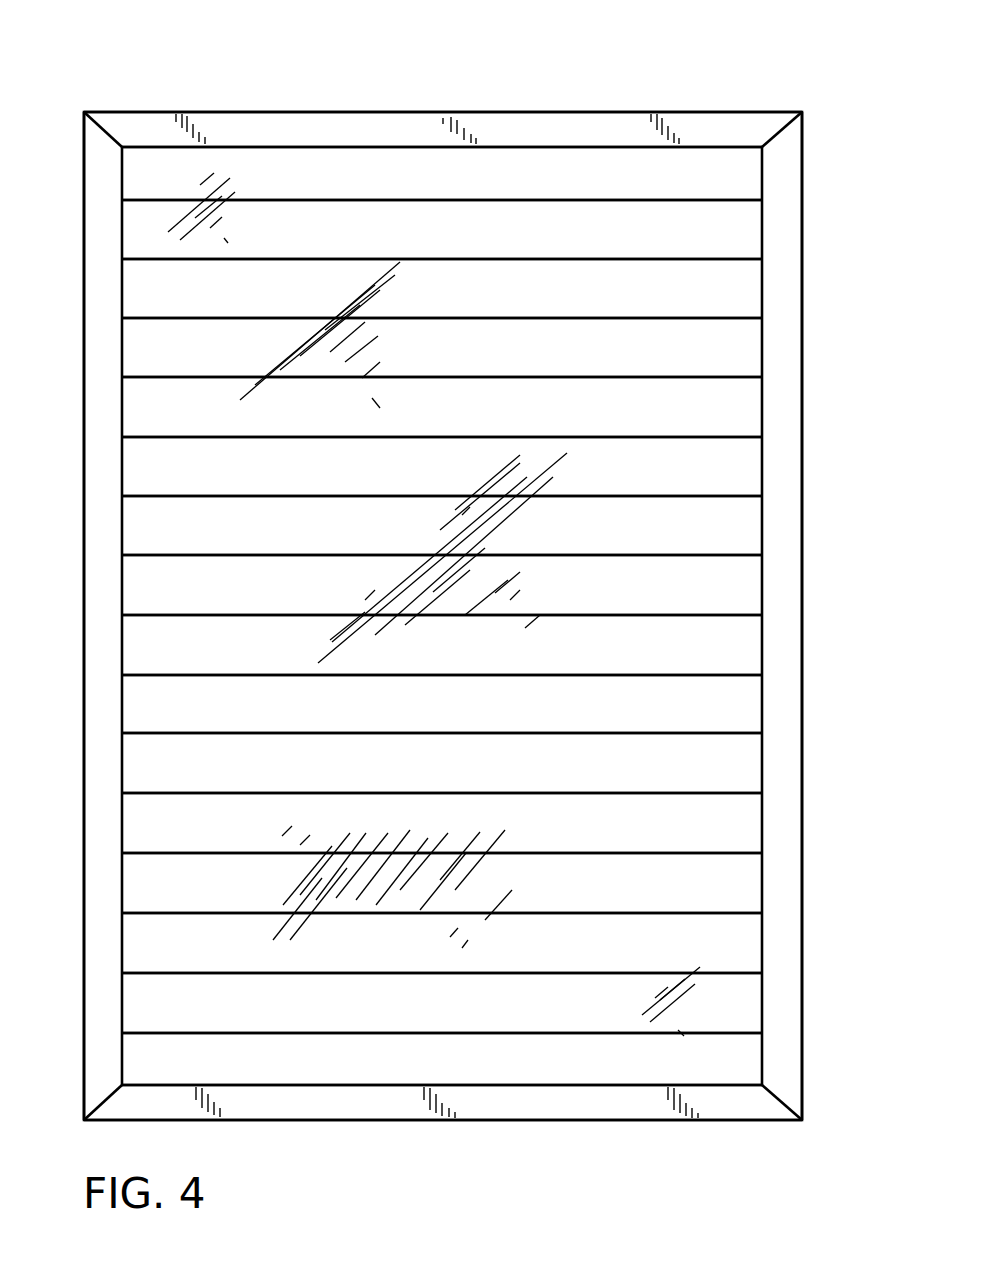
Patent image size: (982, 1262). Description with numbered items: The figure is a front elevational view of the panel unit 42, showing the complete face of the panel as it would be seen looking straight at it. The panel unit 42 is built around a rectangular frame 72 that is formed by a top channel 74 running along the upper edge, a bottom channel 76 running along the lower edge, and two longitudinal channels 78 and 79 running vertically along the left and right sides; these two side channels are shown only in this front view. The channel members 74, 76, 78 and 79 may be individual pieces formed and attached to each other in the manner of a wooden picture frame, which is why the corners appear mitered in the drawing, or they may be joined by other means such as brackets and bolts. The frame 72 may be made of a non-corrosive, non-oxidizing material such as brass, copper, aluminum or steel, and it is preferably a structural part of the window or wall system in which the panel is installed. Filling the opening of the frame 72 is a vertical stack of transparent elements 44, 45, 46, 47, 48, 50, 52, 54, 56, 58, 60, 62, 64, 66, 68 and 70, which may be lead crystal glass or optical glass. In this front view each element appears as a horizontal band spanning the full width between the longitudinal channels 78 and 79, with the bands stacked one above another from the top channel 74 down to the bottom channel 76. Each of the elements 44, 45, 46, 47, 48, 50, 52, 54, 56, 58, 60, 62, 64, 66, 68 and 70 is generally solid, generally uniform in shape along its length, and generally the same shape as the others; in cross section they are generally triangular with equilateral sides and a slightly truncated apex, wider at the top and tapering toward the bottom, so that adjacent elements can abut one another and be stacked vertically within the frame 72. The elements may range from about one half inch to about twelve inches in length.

The panel unit 42 is at (712, 90).
The transparent element 44 is at (747, 187).
The transparent element 45 is at (745, 247).
The transparent element 46 is at (745, 299).
The transparent element 47 is at (741, 360).
The transparent element 48 is at (741, 413).
The transparent element 50 is at (738, 470).
The transparent element 52 is at (742, 530).
The transparent element 54 is at (741, 601).
The transparent element 56 is at (741, 653).
The transparent element 58 is at (744, 715).
The transparent element 60 is at (744, 775).
The transparent element 62 is at (742, 834).
The transparent element 64 is at (738, 893).
The transparent element 66 is at (738, 955).
The transparent element 68 is at (744, 1010).
The transparent element 70 is at (744, 1070).
The frame 72 is at (462, 106).
The top channel 74 is at (215, 122).
The bottom channel 76 is at (412, 1112).
The longitudinal channel 78 is at (102, 565).
The longitudinal channel 79 is at (803, 554).